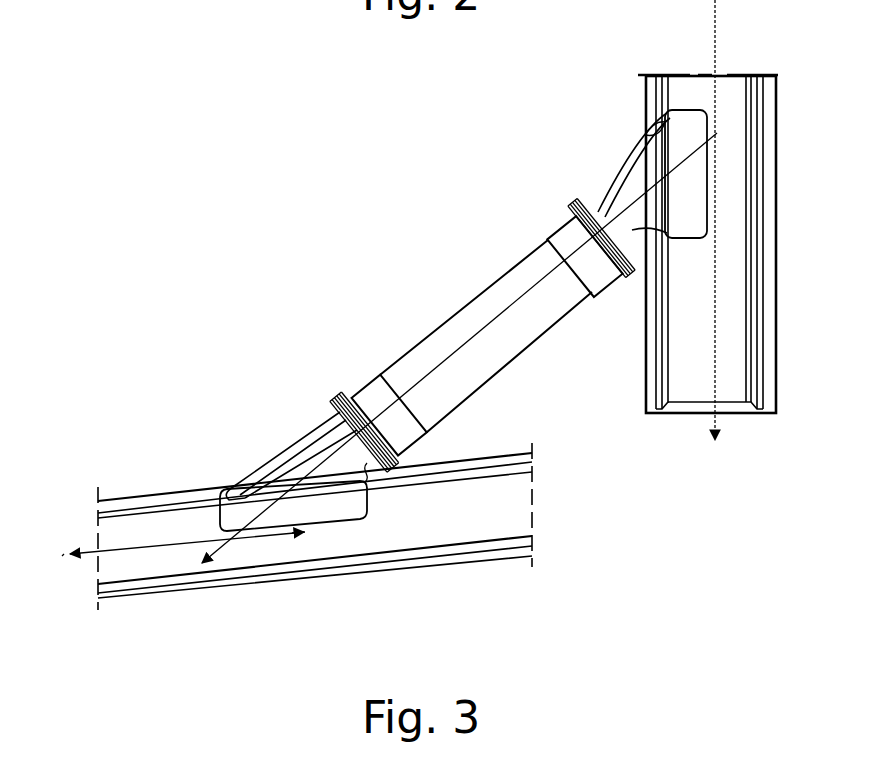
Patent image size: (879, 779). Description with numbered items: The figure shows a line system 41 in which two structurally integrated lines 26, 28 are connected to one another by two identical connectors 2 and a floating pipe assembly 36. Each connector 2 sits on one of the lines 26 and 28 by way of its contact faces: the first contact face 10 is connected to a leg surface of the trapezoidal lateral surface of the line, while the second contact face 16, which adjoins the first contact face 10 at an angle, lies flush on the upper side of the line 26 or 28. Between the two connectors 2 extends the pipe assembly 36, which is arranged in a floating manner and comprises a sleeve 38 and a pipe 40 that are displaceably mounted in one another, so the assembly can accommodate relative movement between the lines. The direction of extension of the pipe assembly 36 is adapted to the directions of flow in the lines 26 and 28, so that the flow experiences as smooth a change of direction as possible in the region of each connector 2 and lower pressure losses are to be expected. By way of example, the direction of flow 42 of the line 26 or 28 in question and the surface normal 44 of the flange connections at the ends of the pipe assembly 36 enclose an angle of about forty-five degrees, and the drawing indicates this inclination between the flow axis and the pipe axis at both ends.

The connector 2 is at (434, 265).
The first contact face 10 is at (250, 458).
The second contact face 16 is at (345, 510).
The structurally integrated line 26 is at (485, 543).
The structurally integrated line 28 is at (735, 308).
The pipe assembly 36 is at (430, 283).
The sleeve 38 is at (366, 383).
The pipe 40 is at (513, 279).
The line system 41 is at (342, 238).
The direction of flow 42 is at (718, 4).
The surface normal 44 is at (217, 553).